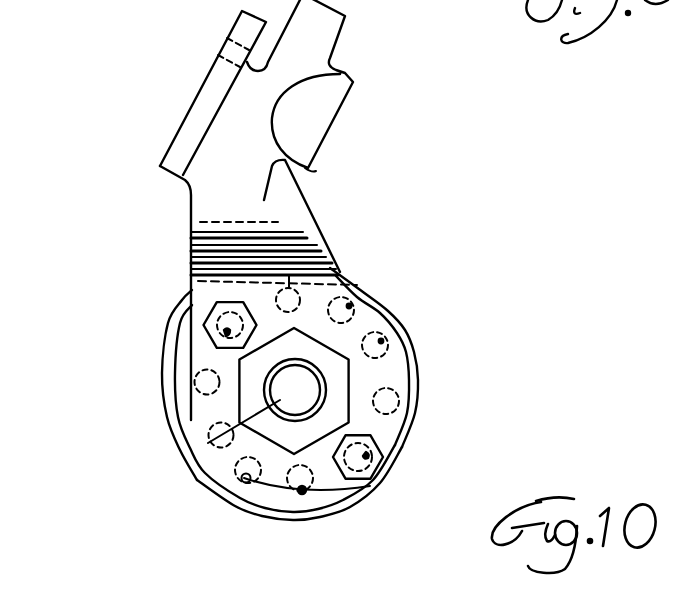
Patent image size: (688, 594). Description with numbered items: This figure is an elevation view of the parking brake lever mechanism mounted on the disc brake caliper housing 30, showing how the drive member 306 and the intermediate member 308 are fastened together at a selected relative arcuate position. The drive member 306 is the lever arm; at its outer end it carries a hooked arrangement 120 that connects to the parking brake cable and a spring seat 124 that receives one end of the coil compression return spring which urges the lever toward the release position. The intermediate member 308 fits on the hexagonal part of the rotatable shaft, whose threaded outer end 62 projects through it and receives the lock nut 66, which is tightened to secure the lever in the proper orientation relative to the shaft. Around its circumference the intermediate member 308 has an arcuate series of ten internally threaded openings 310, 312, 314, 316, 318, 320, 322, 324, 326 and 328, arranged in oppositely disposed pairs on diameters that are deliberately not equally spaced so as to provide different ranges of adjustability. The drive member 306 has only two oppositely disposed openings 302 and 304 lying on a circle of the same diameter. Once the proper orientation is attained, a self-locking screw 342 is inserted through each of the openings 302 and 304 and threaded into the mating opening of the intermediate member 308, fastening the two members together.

The hooked arrangement 120 is at (246, 17).
The spring seat 124 is at (342, 73).
The drive member 306 is at (190, 197).
The caliper housing 30 is at (355, 273).
The opening 328 is at (306, 230).
The opening 302 is at (191, 298).
The self-locking screw 342 is at (212, 305).
The intermediate member 308 is at (196, 350).
The opening 310 is at (165, 353).
The opening 314 is at (196, 386).
The nut 66 is at (248, 398).
The opening 322 is at (268, 440).
The outer end 62 is at (241, 478).
The opening 318 is at (207, 443).
The opening 326 is at (301, 492).
The opening 304 is at (383, 500).
The opening 320 is at (410, 331).
The opening 324 is at (375, 287).
The opening 316 is at (398, 402).
The opening 312 is at (396, 446).